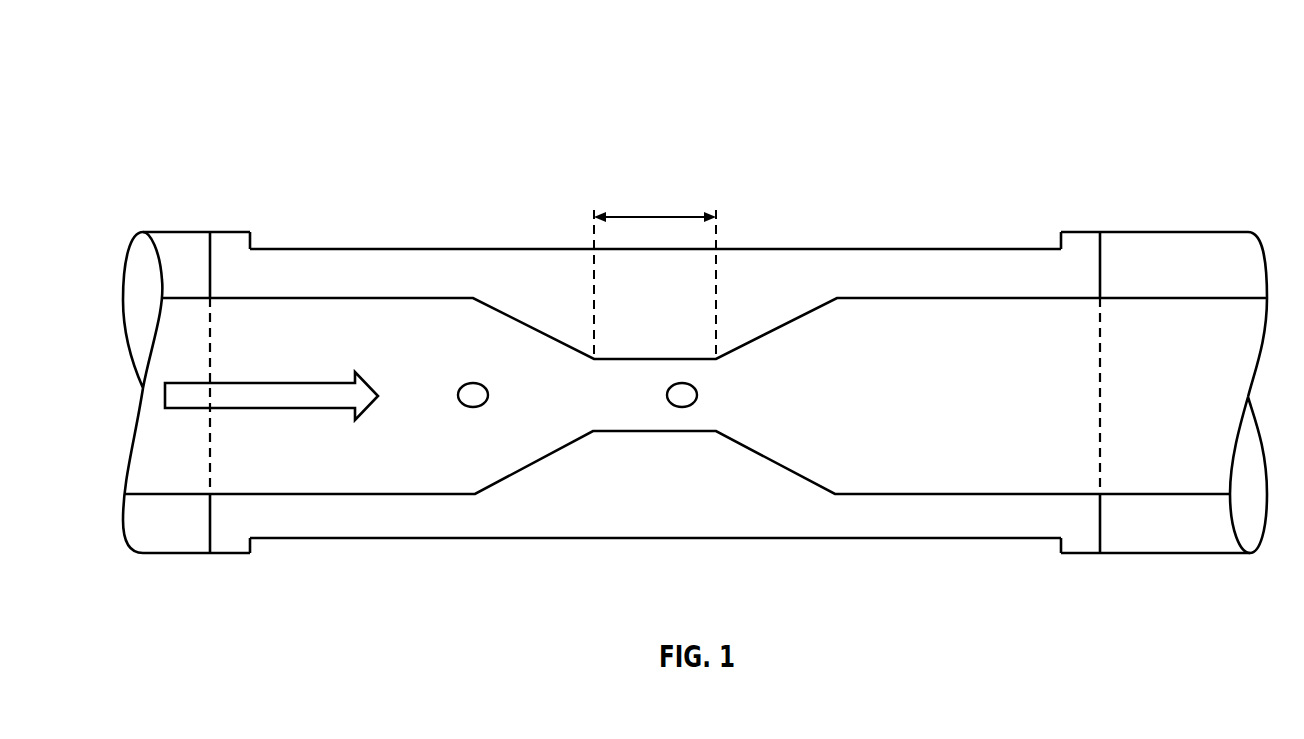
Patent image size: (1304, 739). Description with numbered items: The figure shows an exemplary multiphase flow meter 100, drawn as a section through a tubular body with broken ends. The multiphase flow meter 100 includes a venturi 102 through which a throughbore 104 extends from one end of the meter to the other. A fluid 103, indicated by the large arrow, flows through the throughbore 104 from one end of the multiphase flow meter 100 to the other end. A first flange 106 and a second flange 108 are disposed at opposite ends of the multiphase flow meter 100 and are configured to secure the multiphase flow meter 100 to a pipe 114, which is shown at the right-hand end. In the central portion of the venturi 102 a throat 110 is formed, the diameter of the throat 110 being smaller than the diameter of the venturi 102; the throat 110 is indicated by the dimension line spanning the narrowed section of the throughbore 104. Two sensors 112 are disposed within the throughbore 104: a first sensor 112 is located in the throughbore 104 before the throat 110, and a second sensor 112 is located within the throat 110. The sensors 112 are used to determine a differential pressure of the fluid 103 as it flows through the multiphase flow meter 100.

The multiphase flow meter 100 is at (120, 105).
The venturi 102 is at (935, 494).
The fluid 103 is at (285, 392).
The throughbore 104 is at (931, 409).
The first flange 106 is at (228, 243).
The second flange 108 is at (1073, 243).
The throat 110 is at (655, 217).
The sensors 112 is at (680, 408).
The pipe 114 is at (1149, 530).